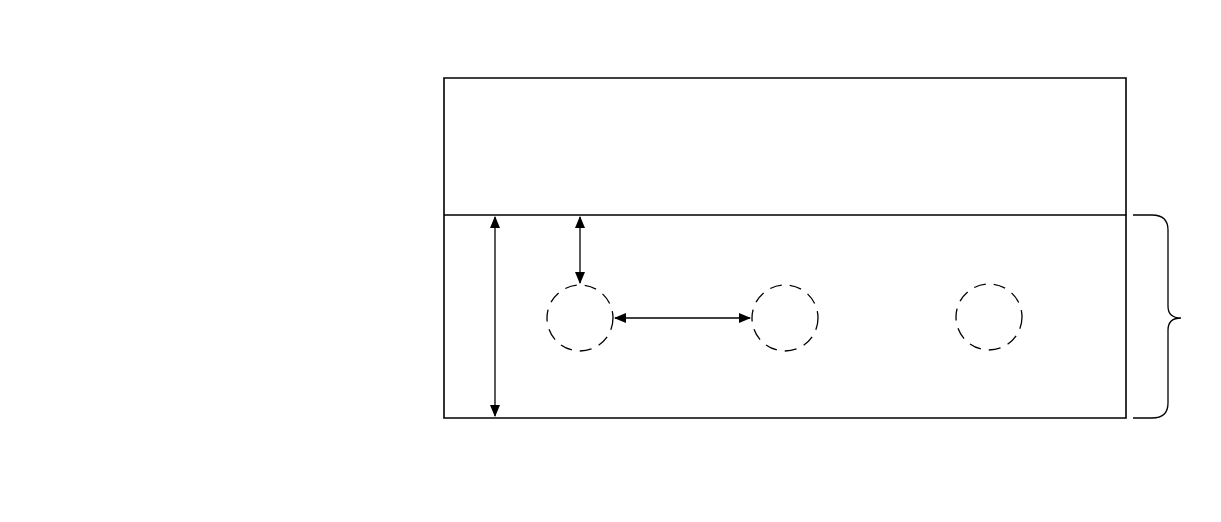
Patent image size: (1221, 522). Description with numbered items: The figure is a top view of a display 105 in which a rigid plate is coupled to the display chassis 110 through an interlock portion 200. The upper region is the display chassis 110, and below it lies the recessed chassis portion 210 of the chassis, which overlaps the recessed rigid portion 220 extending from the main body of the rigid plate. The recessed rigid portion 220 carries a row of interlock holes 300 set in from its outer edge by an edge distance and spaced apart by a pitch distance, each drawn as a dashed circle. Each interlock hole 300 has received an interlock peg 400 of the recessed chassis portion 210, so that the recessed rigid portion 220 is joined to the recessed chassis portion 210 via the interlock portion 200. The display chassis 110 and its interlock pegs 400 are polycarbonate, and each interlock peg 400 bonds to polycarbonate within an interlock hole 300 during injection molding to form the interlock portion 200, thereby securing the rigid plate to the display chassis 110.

The display 105 is at (412, 44).
The display chassis 110 is at (1093, 118).
The recessed chassis portion 210 is at (785, 316).
The recessed rigid portion 220 is at (1099, 255).
The interlock portion 200 is at (1177, 316).
The interlock hole 300 is at (580, 353).
The interlock peg 400 is at (596, 329).